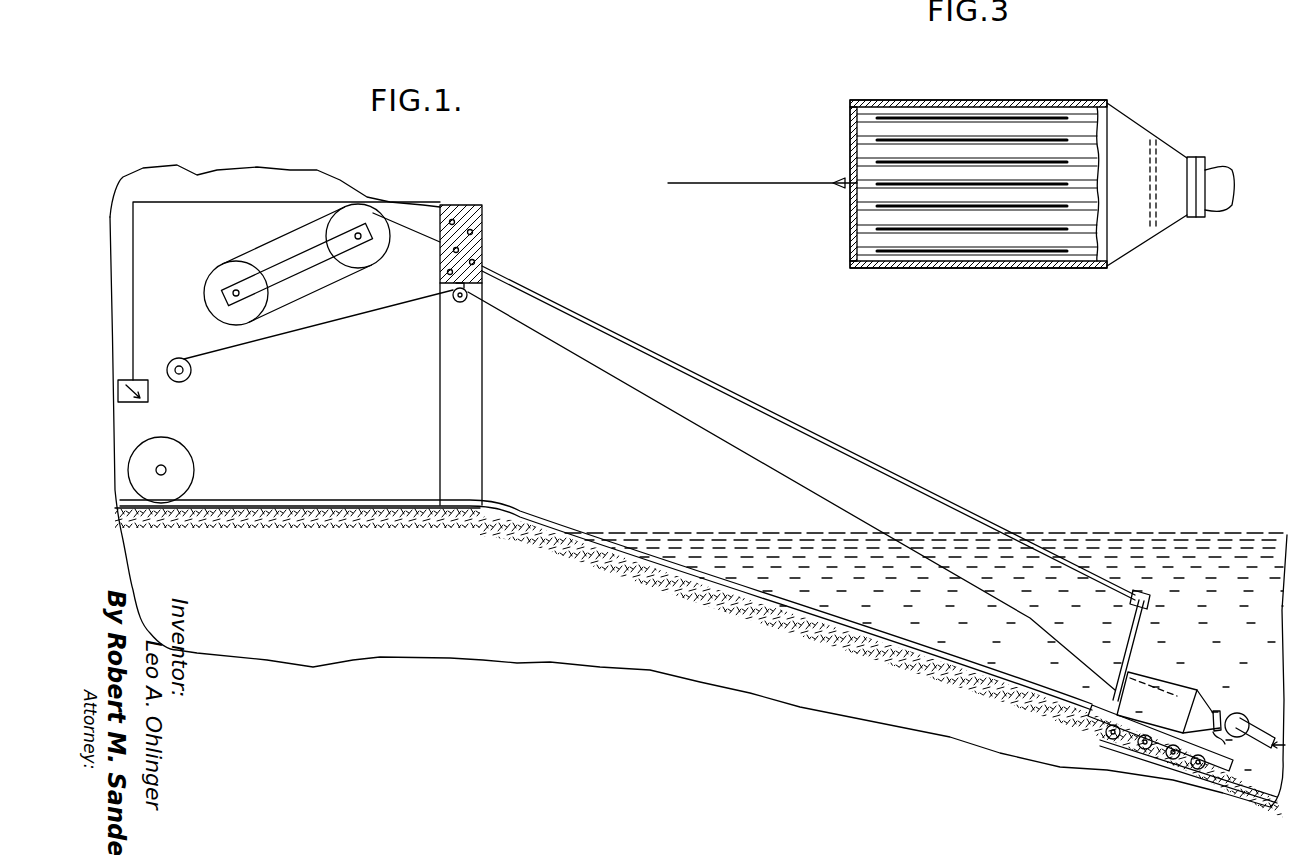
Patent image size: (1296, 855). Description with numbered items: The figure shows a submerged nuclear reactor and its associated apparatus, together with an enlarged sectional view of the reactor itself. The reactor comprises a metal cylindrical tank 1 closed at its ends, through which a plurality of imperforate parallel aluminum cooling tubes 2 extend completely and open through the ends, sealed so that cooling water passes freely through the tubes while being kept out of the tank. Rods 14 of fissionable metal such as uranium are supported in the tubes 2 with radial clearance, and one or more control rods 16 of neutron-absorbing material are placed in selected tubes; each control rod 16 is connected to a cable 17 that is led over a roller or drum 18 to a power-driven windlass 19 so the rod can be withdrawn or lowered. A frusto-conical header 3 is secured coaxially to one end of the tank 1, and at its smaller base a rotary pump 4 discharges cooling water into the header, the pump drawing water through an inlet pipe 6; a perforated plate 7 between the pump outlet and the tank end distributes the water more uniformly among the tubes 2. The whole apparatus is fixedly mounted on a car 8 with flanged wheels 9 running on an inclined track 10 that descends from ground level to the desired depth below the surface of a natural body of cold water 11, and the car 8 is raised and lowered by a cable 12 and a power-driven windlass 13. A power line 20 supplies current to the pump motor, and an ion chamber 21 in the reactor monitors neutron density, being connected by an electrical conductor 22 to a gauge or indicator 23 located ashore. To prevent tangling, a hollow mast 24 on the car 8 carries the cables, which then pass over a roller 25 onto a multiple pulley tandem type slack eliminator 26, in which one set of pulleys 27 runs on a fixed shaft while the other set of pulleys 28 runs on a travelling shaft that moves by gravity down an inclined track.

In FIG. 1, the tank 1 is at (1175, 690).
In FIG. 3, the tank 1 is at (990, 268).
In FIG. 3, the cooling tubes 2 is at (940, 117).
In FIG. 3, the frusto-conical header 3 is at (1150, 128).
In FIG. 1, the rotary pump 4 is at (1242, 725).
In FIG. 3, the rotary pump 4 is at (1232, 178).
In FIG. 1, the inlet pipe 6 is at (1262, 745).
In FIG. 3, the perforated plate 7 is at (1157, 212).
In FIG. 1, the car 8 is at (1137, 727).
In FIG. 1, the flanged wheels 9 is at (1259, 776).
In FIG. 1, the inclined track 10 is at (933, 675).
In FIG. 1, the body of cold water 11 is at (1192, 516).
In FIG. 1, the cable 12 is at (765, 596).
In FIG. 1, the windlass 13 is at (185, 457).
In FIG. 3, the rods 14 is at (967, 252).
In FIG. 1, the control rods 16 is at (1130, 680).
In FIG. 3, the control rods 16 is at (835, 186).
In FIG. 1, the cable 17 is at (823, 502).
In FIG. 3, the cable 17 is at (750, 183).
In FIG. 1, the roller or drum 18 is at (455, 303).
In FIG. 1, the windlass 19 is at (191, 370).
In FIG. 1, the power line 20 is at (983, 520).
In FIG. 1, the ion chamber 21 is at (1128, 712).
In FIG. 1, the electrical conductor 22 is at (942, 505).
In FIG. 1, the gauge or indicator 23 is at (140, 402).
In FIG. 1, the hollow mast 24 is at (1133, 645).
In FIG. 1, the roller 25 is at (482, 250).
In FIG. 1, the slack eliminator 26 is at (291, 243).
In FIG. 1, the pulleys 27 is at (358, 213).
In FIG. 1, the pulleys 28 is at (223, 263).